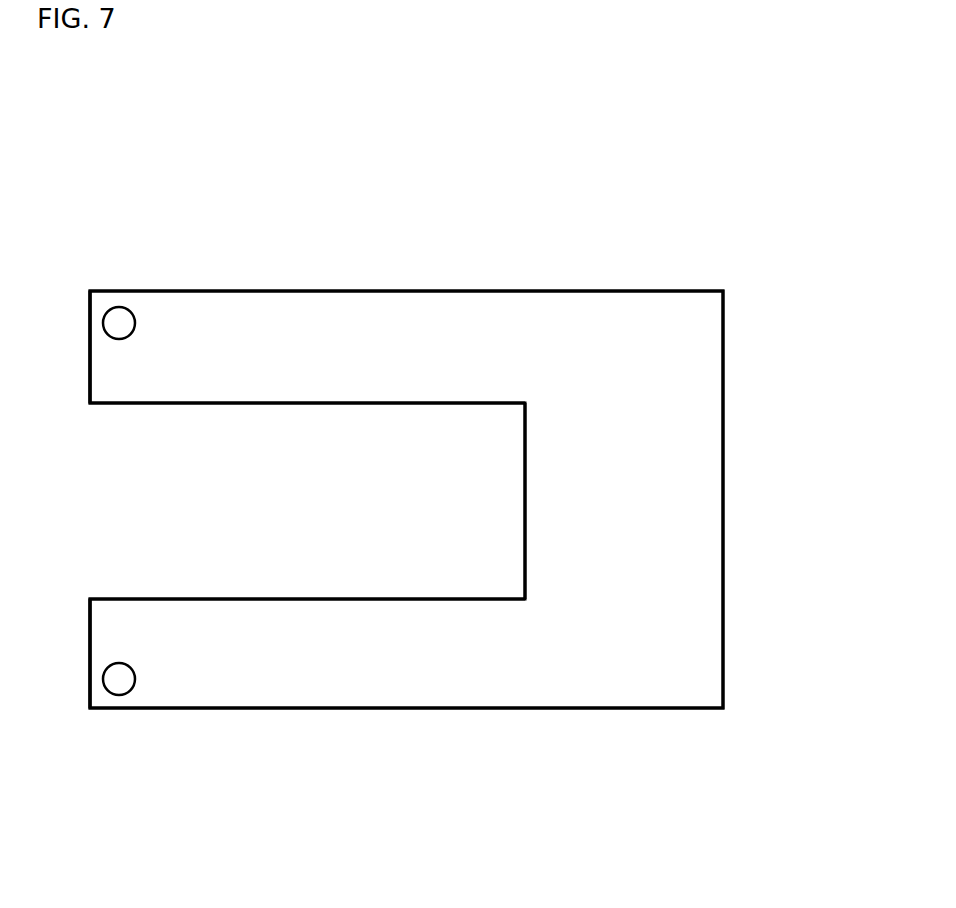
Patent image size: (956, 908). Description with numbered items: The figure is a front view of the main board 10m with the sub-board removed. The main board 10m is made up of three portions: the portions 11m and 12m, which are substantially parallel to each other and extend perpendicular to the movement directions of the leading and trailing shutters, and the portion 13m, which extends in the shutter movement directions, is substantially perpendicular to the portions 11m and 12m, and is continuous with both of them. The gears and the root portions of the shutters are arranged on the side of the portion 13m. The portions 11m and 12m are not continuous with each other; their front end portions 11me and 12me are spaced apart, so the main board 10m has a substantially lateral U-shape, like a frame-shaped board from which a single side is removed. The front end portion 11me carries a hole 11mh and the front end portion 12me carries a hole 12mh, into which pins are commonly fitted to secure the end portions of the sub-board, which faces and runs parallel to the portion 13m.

The main board 10m is at (497, 708).
The portion 11m is at (354, 683).
The portion 12m is at (369, 368).
The portion 13m is at (655, 523).
The hole 11mh is at (120, 666).
The hole 12mh is at (118, 307).
The front end portion 11me is at (163, 635).
The front end portion 12me is at (136, 380).